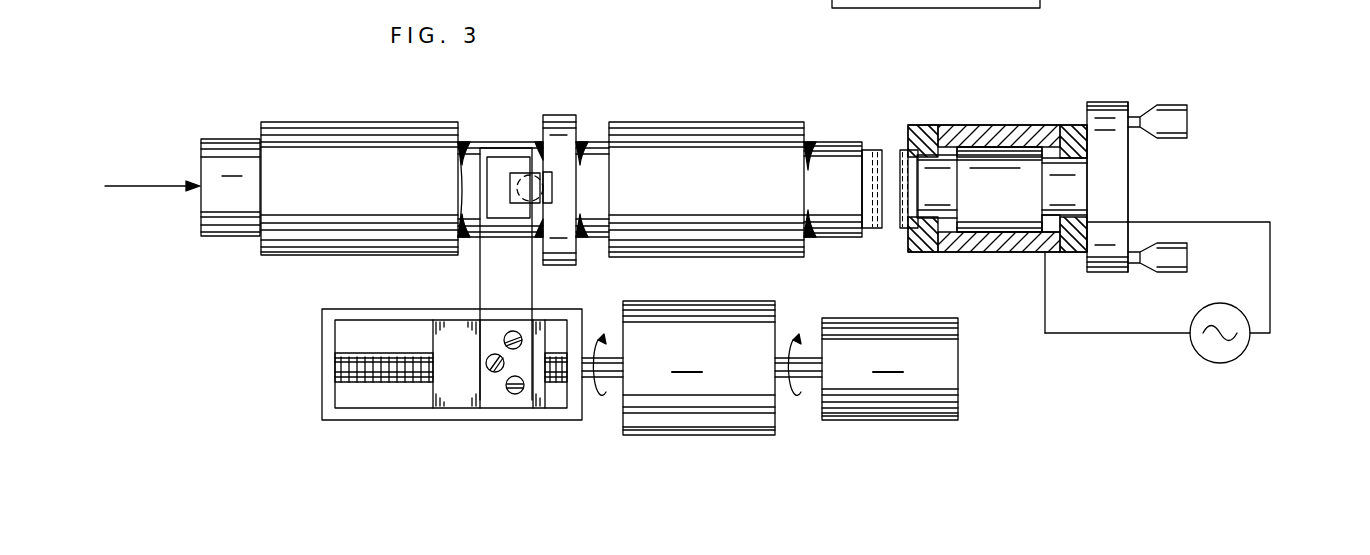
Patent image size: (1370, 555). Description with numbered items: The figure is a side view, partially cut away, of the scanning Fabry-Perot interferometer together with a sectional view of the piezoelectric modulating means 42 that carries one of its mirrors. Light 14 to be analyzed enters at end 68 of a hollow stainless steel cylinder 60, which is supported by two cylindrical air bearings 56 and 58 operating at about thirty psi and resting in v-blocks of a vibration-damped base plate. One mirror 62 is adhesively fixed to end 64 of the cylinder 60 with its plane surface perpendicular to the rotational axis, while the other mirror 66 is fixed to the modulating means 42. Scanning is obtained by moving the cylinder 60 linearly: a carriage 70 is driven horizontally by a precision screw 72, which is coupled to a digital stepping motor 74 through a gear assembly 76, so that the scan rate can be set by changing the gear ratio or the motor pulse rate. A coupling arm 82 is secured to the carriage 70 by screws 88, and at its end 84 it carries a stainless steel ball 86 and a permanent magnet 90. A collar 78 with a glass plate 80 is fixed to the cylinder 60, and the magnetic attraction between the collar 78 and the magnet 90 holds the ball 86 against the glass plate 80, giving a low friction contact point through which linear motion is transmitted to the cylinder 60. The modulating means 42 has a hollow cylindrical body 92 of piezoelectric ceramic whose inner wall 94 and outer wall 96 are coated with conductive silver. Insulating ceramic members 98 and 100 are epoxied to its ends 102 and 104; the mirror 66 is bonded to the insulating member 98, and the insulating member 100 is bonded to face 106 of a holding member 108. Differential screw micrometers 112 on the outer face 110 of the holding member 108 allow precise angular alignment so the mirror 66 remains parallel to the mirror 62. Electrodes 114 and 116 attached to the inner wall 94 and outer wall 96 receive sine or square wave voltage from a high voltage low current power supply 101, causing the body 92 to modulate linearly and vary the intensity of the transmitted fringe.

The input light 14 is at (133, 185).
The modulating means 42 is at (955, 251).
The cylindrical air bearing 56 is at (720, 132).
The cylindrical air bearing 58 is at (337, 132).
The hollow metal cylinder 60 is at (820, 145).
The mirror 62 is at (875, 148).
The end of cylinder 64 is at (866, 147).
The mirror 66 is at (904, 231).
The end of cylinder 68 is at (200, 222).
The carriage 70 is at (452, 327).
The precision screw 72 is at (360, 353).
The digital stepping motor 74 is at (866, 369).
The gear assembly 76 is at (678, 368).
The collar 78 is at (558, 133).
The glass plate 80 is at (552, 190).
The coupling arm 82 is at (533, 285).
The end of coupling arm 84 is at (538, 153).
The ball 86 is at (535, 175).
The screws 88 is at (513, 332).
The permanent magnet 90 is at (502, 212).
The hollow cylindrical body 92 is at (972, 247).
The inner wall 94 is at (992, 148).
The outer wall 96 is at (995, 125).
The insulating member 98 is at (917, 125).
The insulating member 100 is at (1072, 125).
The power supply 101 is at (1200, 345).
The end of cylindrical body 102 is at (936, 125).
The end of cylindrical body 104 is at (1065, 125).
The face of holding member 106 is at (1085, 260).
The holding member 108 is at (1112, 188).
The outer face of holding member 110 is at (1130, 162).
The differential screw micrometers 112 is at (1175, 112).
The electrode 114 is at (1048, 232).
The electrode 116 is at (1045, 256).